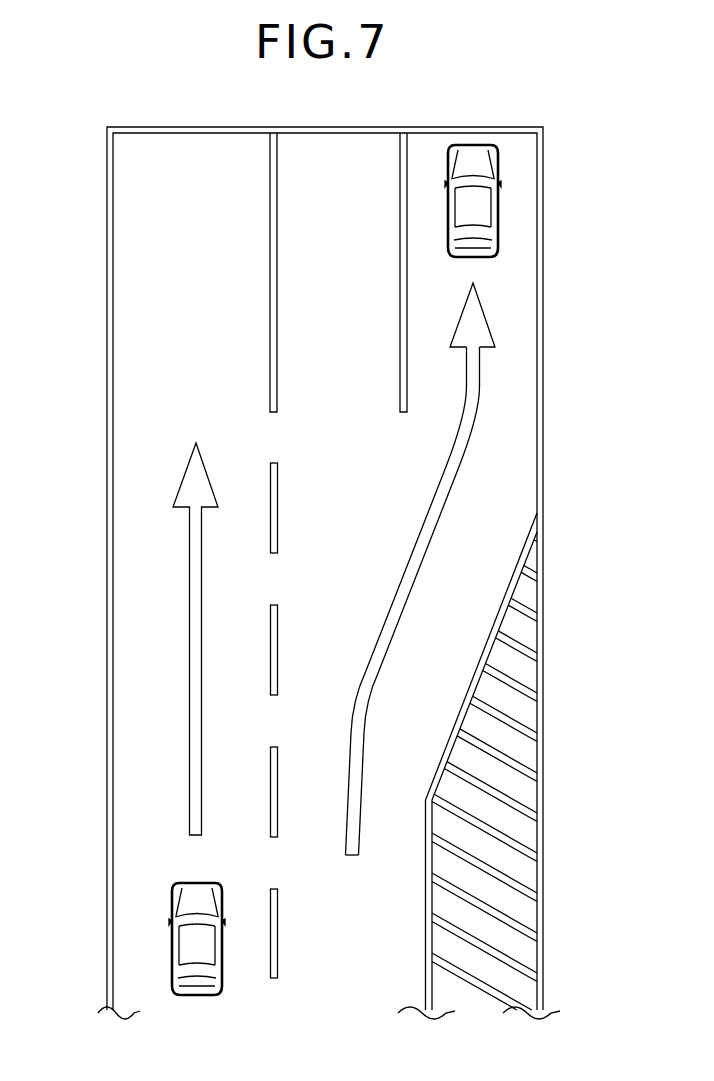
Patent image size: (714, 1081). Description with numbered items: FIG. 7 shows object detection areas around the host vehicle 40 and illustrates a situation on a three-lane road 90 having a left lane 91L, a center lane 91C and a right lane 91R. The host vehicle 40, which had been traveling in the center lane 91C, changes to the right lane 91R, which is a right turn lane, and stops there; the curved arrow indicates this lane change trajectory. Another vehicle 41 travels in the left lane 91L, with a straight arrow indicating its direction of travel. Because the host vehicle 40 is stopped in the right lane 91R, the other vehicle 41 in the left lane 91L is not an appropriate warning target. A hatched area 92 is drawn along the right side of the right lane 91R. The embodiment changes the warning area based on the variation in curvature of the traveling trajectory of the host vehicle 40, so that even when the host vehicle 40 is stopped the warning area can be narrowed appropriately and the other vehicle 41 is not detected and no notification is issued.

The three-lane road 90 is at (107, 263).
The left lane 91L is at (178, 127).
The center lane 91C is at (327, 127).
The right lane 91R is at (472, 127).
The host vehicle 40 is at (498, 198).
The other vehicle 41 is at (172, 942).
The hatched zone (zebra zone) 92 is at (537, 795).